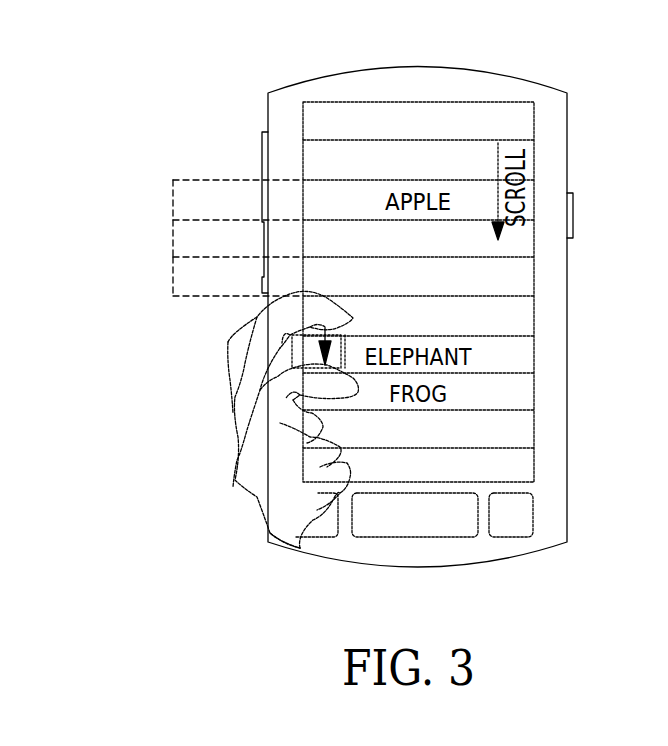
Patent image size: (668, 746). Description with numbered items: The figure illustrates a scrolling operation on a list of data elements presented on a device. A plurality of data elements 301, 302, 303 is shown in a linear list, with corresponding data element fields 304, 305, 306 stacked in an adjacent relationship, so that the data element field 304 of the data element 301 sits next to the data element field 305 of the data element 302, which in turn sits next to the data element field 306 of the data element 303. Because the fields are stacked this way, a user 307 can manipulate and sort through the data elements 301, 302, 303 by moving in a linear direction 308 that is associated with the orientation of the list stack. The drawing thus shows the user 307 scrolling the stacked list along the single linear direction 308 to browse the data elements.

The data element 301 is at (477, 248).
The data element 302 is at (483, 287).
The data element 303 is at (490, 318).
The data element field 304 is at (172, 197).
The data element field 305 is at (172, 237).
The data element field 306 is at (172, 277).
The user 307 is at (237, 462).
The linear direction 308 is at (317, 343).